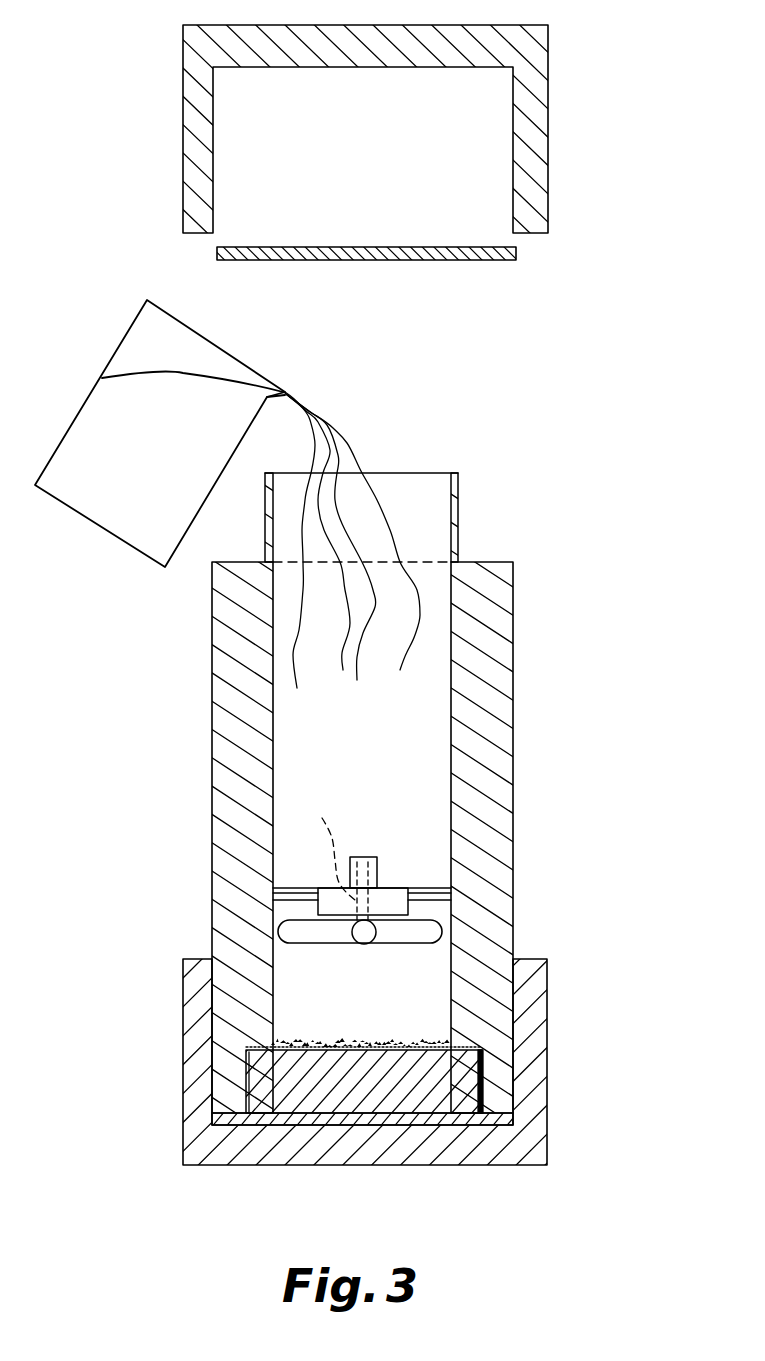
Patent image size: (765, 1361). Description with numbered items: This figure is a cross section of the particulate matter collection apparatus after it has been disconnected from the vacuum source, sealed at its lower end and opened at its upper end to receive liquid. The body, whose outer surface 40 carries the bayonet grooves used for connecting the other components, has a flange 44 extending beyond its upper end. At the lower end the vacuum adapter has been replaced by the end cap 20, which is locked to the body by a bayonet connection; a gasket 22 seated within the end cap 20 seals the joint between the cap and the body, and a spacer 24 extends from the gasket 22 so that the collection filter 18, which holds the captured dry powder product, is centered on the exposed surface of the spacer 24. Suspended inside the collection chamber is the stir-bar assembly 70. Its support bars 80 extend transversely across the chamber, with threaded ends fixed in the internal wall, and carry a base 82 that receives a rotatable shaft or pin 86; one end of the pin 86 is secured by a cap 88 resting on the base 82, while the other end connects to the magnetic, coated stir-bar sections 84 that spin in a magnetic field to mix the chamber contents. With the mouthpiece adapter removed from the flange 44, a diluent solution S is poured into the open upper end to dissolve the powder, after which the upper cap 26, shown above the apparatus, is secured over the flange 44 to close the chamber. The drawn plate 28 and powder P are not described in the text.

The upper cap 26 is at (548, 146).
The plate 28 is at (435, 260).
The diluent solution S is at (347, 442).
The flange 44 is at (458, 507).
The outer surface 40 is at (513, 742).
The stir-bar assembly 70 is at (375, 822).
The support bars 80 is at (291, 888).
The base 82 is at (392, 900).
The cap 88 is at (365, 857).
The rotatable shaft or pin 86 is at (320, 849).
The stir-bar sections 84 is at (315, 932).
The powder P is at (322, 1047).
The collection filter 18 is at (400, 1055).
The end cap 20 is at (513, 1022).
The gasket 22 is at (495, 1112).
The spacer 24 is at (456, 1076).